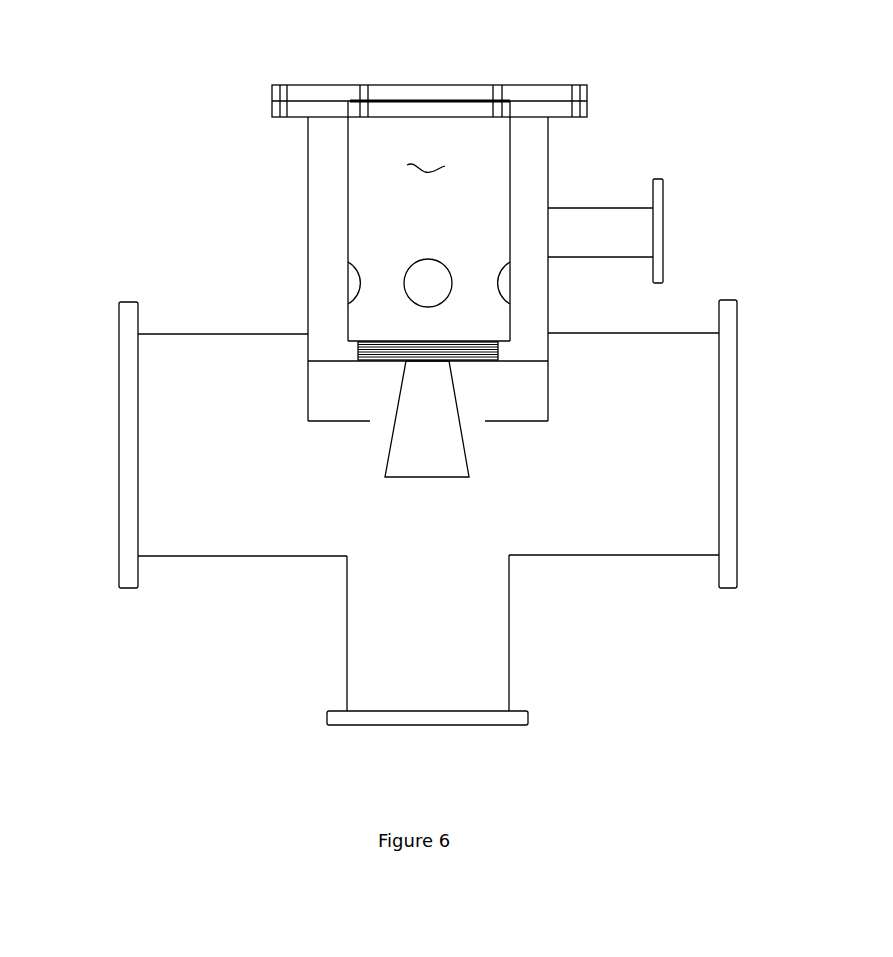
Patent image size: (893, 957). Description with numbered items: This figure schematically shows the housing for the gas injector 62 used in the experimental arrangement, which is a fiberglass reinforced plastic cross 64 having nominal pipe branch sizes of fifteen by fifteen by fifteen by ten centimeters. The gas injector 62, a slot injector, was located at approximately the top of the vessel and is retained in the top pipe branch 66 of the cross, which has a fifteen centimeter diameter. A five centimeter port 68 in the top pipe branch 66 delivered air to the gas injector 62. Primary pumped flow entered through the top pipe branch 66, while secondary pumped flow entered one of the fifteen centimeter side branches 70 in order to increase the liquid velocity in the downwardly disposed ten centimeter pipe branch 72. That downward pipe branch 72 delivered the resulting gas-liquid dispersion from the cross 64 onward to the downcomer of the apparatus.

The gas injector 62 is at (432, 162).
The fiberglass reinforced plastic cross 64 is at (258, 638).
The top pipe branch 66 is at (308, 153).
The port 68 is at (665, 185).
The side branches 70 is at (118, 424).
The downwardly disposed pipe branch 72 is at (347, 670).